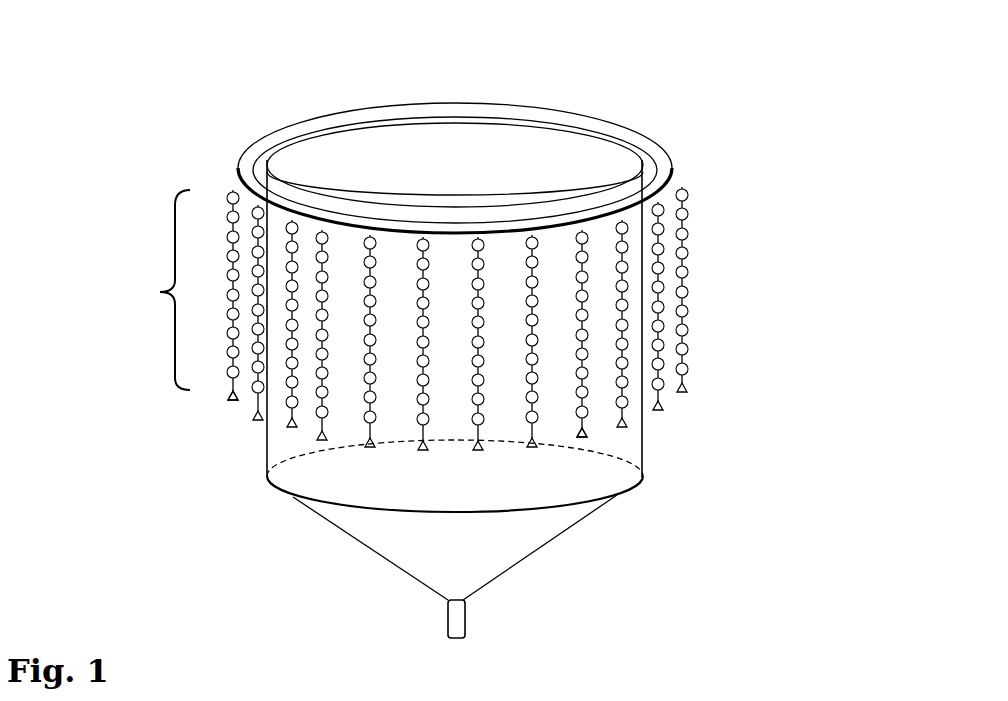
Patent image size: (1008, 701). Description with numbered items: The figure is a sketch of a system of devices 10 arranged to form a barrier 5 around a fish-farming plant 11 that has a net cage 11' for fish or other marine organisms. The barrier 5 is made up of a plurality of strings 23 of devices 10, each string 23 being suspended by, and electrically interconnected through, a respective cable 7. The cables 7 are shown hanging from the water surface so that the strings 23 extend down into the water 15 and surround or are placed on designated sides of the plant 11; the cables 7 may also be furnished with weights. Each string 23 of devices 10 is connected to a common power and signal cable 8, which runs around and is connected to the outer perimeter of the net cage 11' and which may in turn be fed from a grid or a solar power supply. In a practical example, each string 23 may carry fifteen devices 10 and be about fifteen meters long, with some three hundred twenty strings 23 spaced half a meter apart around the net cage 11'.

The water 15 is at (798, 309).
The farming plant 11 is at (445, 124).
The common power and signal cable 8 is at (688, 157).
The net cage 11' is at (384, 399).
The cable 7 is at (689, 238).
The device 10 is at (223, 191).
The barrier 5 is at (160, 290).
The string 23 is at (221, 416).